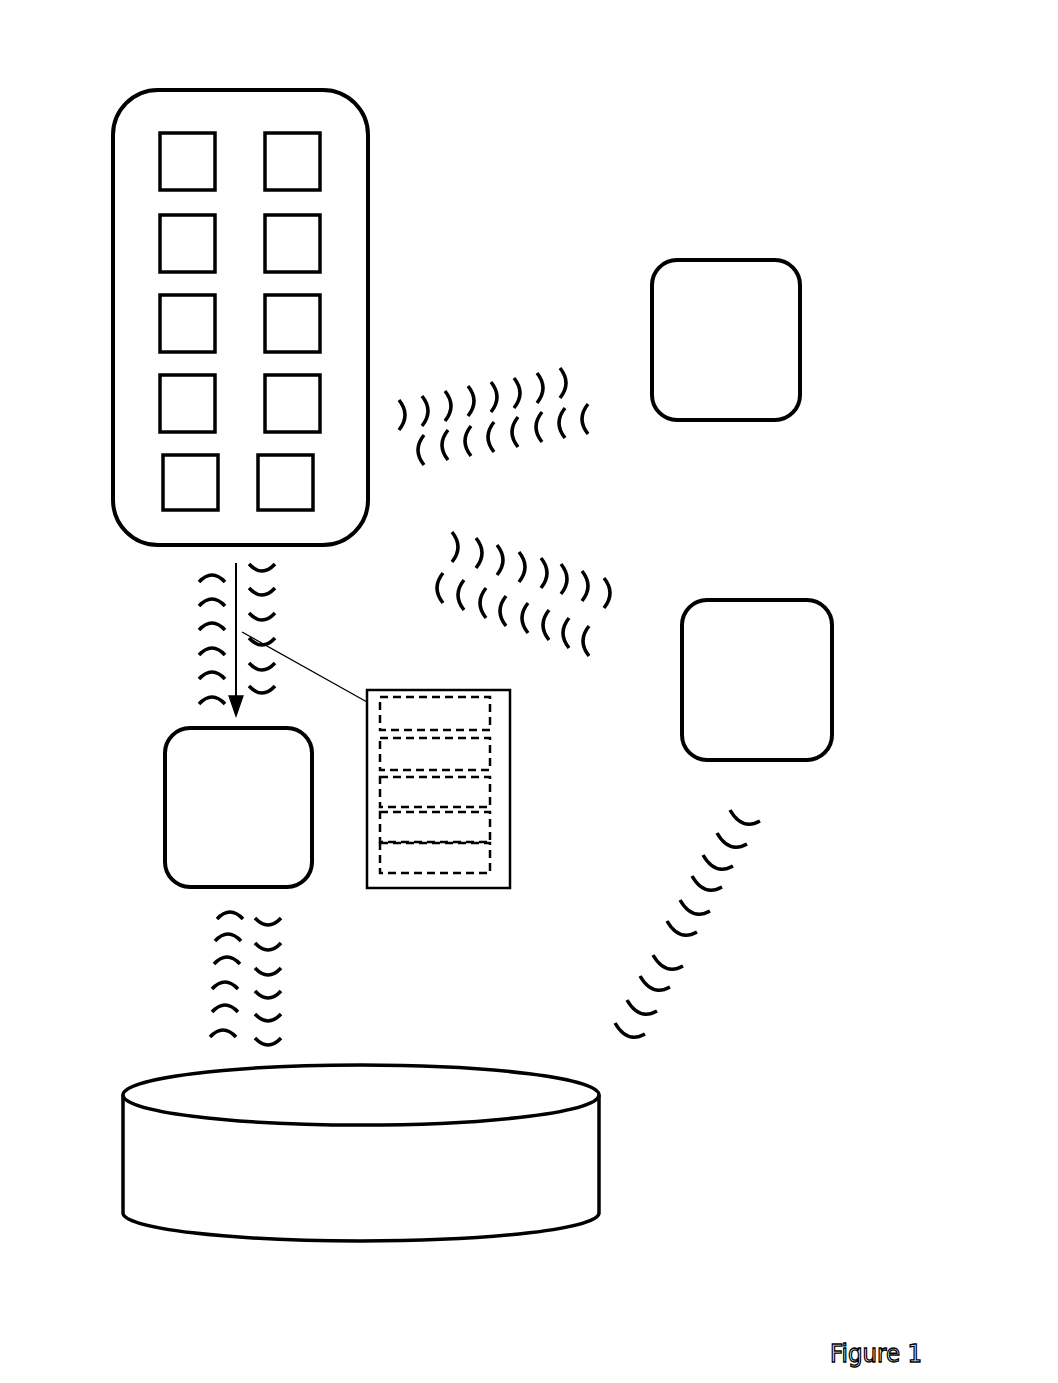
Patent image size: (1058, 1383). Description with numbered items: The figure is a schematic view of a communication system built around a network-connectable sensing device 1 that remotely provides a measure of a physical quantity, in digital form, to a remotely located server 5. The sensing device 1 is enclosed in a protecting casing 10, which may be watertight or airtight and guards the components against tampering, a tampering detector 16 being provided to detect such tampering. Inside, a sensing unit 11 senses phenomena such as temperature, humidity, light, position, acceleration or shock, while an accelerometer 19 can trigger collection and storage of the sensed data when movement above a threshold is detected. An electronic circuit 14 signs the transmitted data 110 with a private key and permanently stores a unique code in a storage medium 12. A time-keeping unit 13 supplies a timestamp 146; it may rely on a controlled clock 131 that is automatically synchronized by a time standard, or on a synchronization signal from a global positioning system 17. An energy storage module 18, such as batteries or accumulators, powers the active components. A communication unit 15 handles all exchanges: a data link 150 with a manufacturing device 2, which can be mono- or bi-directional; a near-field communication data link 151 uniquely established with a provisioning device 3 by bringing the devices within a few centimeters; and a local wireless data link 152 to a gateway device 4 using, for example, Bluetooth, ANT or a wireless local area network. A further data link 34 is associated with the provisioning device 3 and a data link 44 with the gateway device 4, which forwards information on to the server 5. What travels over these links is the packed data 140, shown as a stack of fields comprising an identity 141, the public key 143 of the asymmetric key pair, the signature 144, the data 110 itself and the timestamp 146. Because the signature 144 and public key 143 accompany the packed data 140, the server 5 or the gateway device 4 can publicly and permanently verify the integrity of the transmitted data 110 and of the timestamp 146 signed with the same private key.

The sensing device 1 is at (122, 62).
The casing 10 is at (135, 547).
The sensing unit 11 is at (160, 160).
The storage medium 12 is at (160, 240).
The time-keeping unit 13 is at (160, 320).
The electronic circuit 14 is at (160, 403).
The clock 131 is at (162, 468).
The communication unit 15 is at (318, 510).
The tampering detector 16 is at (316, 163).
The global positioning system 17 is at (316, 245).
The energy storage module 18 is at (316, 324).
The accelerometer 19 is at (316, 403).
The manufacturing device 2 is at (802, 248).
The provisioning device 3 is at (840, 617).
The gateway device 4 is at (138, 837).
The server 5 is at (623, 1138).
The data link 150 is at (550, 430).
The near-field communication data link 151 is at (553, 593).
The wireless data link 152 is at (212, 615).
The data link 34 is at (688, 918).
The data link 44 is at (236, 965).
The packed data 140 is at (422, 806).
The identity 141 is at (492, 718).
The public key 143 is at (492, 748).
The signature 144 is at (492, 783).
The data 110 is at (492, 820).
The timestamp 146 is at (492, 860).